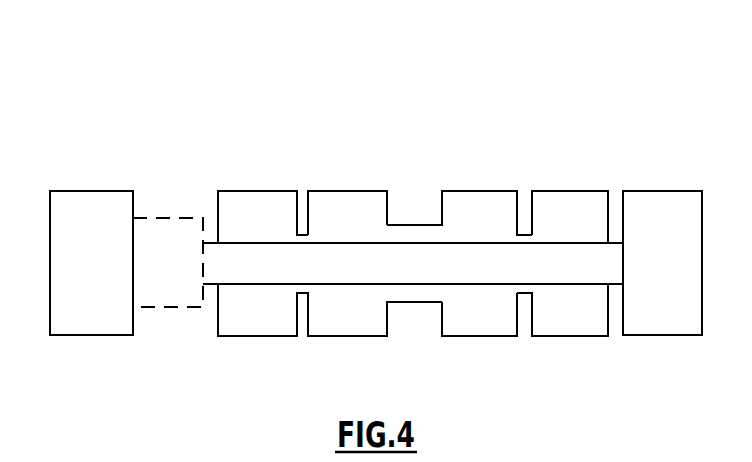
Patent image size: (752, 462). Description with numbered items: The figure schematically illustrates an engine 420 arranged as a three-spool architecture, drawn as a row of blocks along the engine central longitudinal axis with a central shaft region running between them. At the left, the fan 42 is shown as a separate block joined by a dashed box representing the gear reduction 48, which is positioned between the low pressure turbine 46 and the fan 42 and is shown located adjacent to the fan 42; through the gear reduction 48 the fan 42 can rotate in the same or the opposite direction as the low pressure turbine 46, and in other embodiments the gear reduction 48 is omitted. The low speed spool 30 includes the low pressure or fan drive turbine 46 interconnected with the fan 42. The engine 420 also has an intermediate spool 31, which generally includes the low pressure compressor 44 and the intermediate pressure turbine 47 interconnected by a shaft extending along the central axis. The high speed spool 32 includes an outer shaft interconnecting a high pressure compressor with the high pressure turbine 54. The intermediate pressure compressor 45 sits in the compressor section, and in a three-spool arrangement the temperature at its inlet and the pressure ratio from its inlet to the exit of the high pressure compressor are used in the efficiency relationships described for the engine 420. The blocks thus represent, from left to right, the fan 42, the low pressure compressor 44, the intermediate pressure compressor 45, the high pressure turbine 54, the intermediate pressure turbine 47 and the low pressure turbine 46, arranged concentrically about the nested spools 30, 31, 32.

The engine 420 is at (143, 86).
The fan 42 is at (88, 205).
The gear reduction 48 is at (176, 255).
The low speed spool 30 is at (257, 268).
The intermediate spool 31 is at (360, 288).
The high speed spool 32 is at (413, 232).
The low pressure compressor 44 is at (248, 207).
The intermediate pressure compressor 45 is at (345, 207).
The low pressure turbine 46 is at (663, 207).
The intermediate pressure turbine 47 is at (565, 207).
The high pressure turbine 54 is at (483, 320).